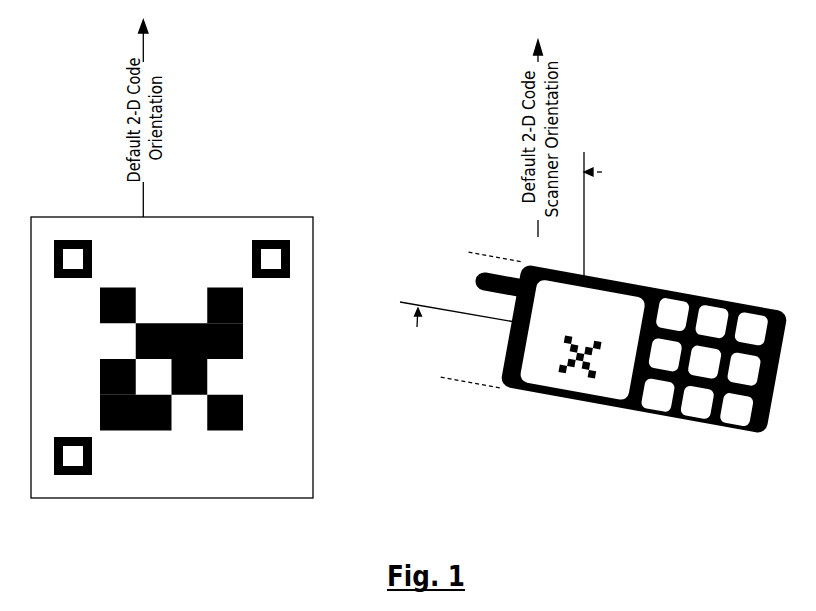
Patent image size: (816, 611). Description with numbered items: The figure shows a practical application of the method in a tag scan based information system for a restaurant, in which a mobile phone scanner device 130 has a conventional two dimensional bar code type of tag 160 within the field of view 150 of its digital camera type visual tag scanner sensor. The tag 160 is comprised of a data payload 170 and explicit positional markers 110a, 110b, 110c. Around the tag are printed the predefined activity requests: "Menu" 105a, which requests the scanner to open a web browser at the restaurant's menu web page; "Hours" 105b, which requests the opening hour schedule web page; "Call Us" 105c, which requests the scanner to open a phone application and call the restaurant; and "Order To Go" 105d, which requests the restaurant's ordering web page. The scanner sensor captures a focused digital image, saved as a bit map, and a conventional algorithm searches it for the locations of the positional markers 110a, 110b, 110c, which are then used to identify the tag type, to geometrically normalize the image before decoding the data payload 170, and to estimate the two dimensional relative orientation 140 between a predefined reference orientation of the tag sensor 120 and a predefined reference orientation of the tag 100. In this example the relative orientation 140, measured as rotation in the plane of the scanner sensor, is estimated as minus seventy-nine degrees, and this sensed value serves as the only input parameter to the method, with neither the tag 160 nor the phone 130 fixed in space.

The predefined reference orientation of the tag 100 is at (206, 338).
The Menu activity request 105a is at (66, 360).
The Hours activity request 105b is at (170, 224).
The Call Us activity request 105c is at (285, 348).
The Order To Go activity request 105d is at (170, 483).
The explicit positional marker 110a is at (91, 240).
The explicit positional marker 110b is at (288, 240).
The explicit positional marker 110c is at (92, 476).
The predefined reference orientation of the tag sensor 120 is at (584, 218).
The mobile phone scanner device 130 is at (650, 280).
The two dimensional relative orientation 140 is at (402, 309).
The field of view 150 is at (568, 378).
The two dimensional bar code tag 160 is at (293, 463).
The data payload 170 is at (243, 413).